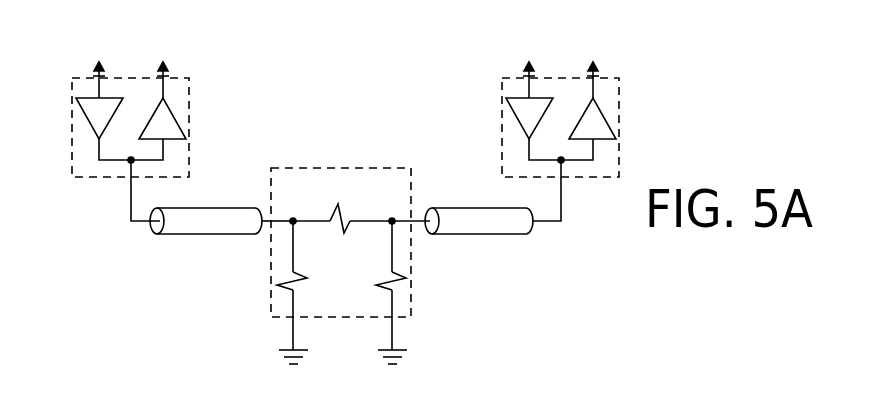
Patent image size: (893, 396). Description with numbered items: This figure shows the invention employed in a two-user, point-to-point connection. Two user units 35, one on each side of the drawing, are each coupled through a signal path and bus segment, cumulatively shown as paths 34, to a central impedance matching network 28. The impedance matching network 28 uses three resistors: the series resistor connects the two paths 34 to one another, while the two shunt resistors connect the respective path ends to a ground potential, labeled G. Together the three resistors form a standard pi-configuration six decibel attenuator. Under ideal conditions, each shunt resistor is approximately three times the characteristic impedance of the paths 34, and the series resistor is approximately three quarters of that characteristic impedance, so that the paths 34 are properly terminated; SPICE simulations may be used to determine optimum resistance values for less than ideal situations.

The transmit/receive amplifier module 35 is at (207, 55).
The paths 34 is at (189, 236).
The impedance matching network 28 is at (348, 167).